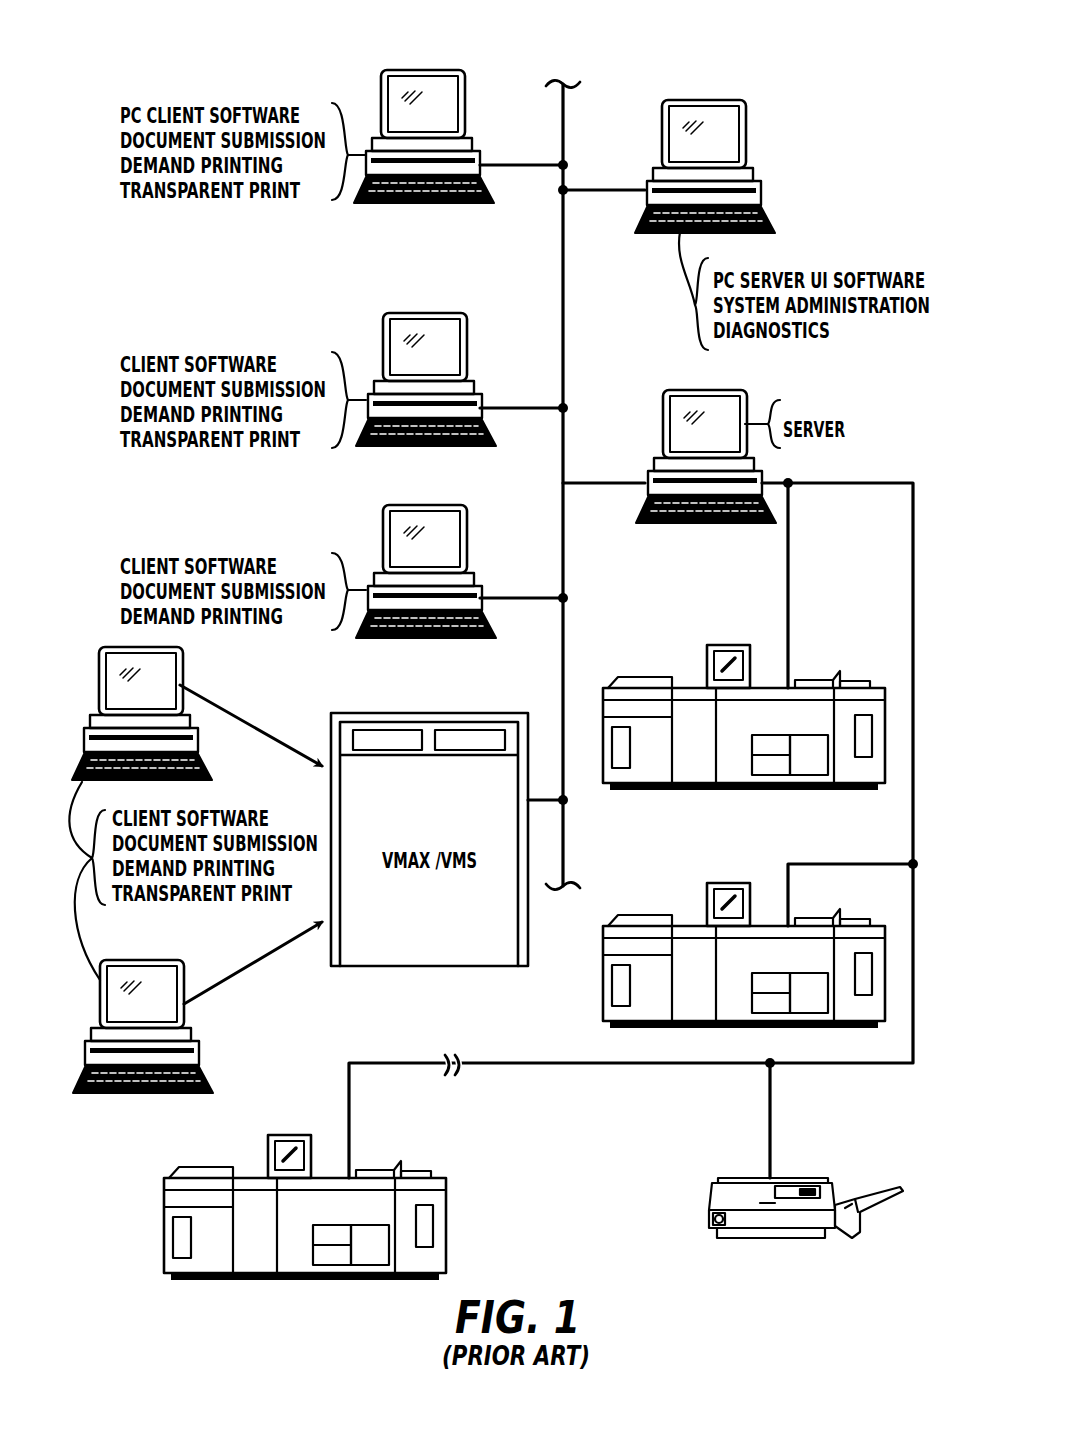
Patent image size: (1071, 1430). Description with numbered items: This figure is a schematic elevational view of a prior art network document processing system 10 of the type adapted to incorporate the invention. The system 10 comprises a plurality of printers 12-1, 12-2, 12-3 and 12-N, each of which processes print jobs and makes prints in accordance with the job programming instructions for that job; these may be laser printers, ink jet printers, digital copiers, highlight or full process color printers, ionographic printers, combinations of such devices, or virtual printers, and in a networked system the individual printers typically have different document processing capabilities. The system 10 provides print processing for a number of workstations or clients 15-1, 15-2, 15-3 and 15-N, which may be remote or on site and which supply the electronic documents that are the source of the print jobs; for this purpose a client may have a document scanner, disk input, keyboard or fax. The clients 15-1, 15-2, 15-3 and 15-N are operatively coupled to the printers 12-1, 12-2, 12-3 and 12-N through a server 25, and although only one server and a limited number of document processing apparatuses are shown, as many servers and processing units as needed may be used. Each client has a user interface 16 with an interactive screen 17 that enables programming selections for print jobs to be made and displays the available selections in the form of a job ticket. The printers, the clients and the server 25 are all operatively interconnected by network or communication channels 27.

The network document processing system 10 is at (606, 38).
The printer 12-1 is at (676, 663).
The printer 12-2 is at (676, 899).
The printer 12-3 is at (729, 1169).
The printer 12-N is at (496, 1147).
The client 15-1 is at (563, 270).
The client 15-2 is at (544, 297).
The client 15-3 is at (544, 487).
The client 15-N is at (698, 96).
The user interface 16 is at (418, 211).
The interactive screen 17 is at (398, 78).
The server 25 is at (676, 380).
The network or communication channels 27 is at (560, 212).